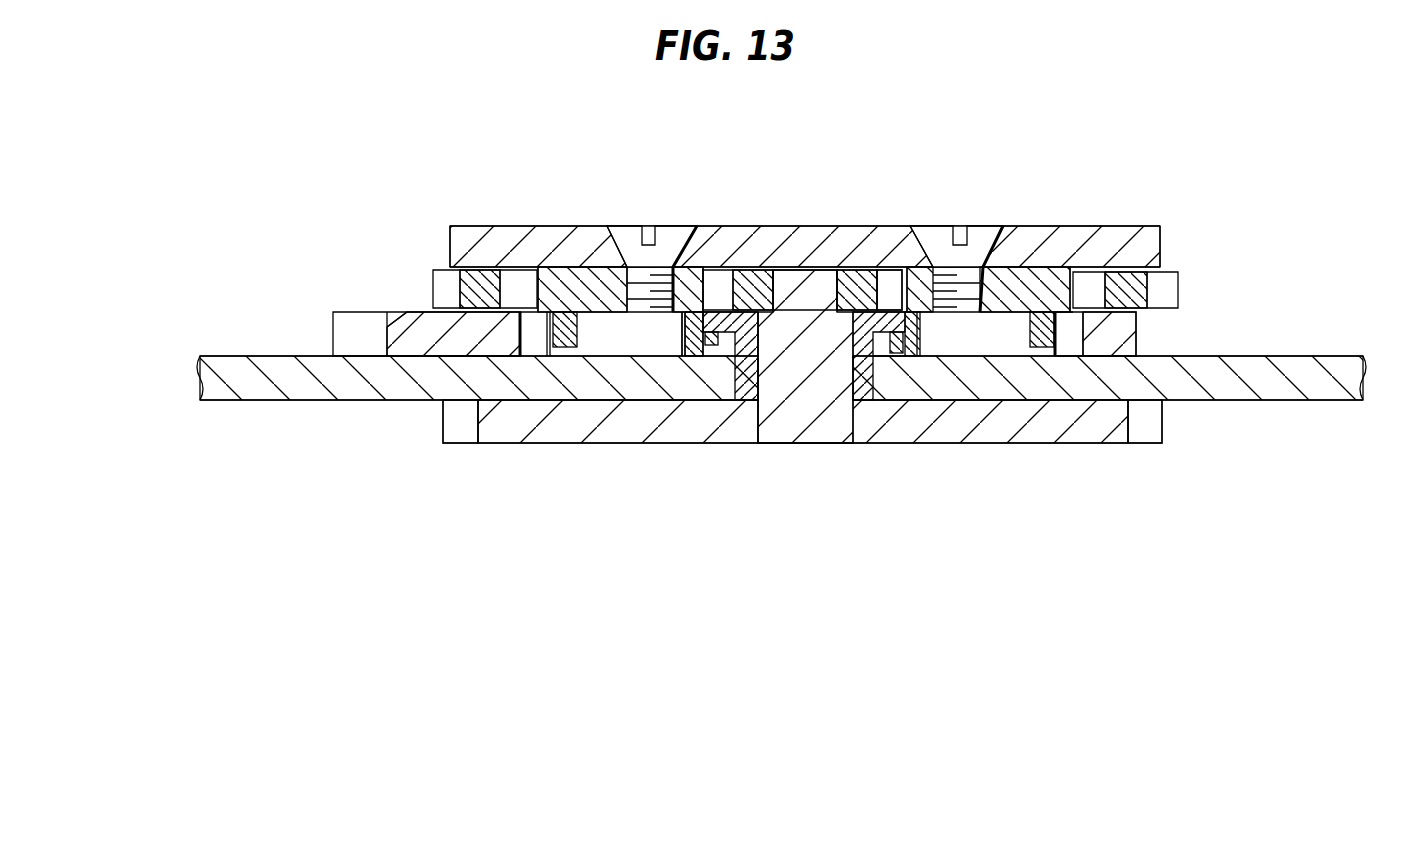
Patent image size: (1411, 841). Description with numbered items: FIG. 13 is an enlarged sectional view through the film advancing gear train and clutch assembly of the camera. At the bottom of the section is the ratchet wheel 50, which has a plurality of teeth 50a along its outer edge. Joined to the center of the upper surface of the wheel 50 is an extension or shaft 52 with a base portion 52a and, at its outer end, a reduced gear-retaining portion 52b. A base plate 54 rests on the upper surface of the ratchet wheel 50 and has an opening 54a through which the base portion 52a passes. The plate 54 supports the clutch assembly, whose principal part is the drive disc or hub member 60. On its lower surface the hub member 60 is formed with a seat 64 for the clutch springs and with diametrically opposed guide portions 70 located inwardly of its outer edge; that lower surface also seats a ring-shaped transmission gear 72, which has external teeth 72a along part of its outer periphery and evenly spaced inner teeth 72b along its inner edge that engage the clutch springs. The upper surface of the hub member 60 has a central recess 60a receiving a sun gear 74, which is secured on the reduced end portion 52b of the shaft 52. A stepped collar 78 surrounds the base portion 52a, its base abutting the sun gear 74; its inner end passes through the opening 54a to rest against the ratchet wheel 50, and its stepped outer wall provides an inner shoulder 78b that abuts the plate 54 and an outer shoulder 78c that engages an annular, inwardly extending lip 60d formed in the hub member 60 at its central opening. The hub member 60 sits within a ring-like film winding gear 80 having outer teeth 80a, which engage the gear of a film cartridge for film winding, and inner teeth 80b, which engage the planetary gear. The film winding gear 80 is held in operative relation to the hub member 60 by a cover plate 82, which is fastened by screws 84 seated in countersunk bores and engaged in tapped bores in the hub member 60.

The ratchet wheel 50 is at (1078, 443).
The teeth 50a is at (452, 428).
The extension or shaft 52 is at (833, 412).
The base portion 52a is at (758, 373).
The reduced gear-retaining portion 52b is at (823, 283).
The base plate 54 is at (1327, 358).
The opening 54a is at (867, 375).
The drive disc or hub member 60 is at (1040, 277).
The central recess 60a is at (890, 282).
The annular inwardly extending lip 60d is at (900, 348).
The seat 64 is at (900, 355).
The guide portions 70 is at (567, 328).
The ring-shaped transmission gear 72 is at (403, 312).
The external teeth 72a is at (343, 320).
The inner teeth 72b is at (537, 347).
The sun gear 74 is at (752, 277).
The collar 78 is at (853, 375).
The inner shoulder 78b is at (712, 340).
The outer shoulder 78c is at (692, 345).
The ring-like film winding gear 80 is at (1140, 310).
The outer teeth 80a is at (1173, 290).
The inner teeth 80b is at (1093, 280).
The cover plate 82 is at (1137, 237).
The screws 84 is at (677, 226).